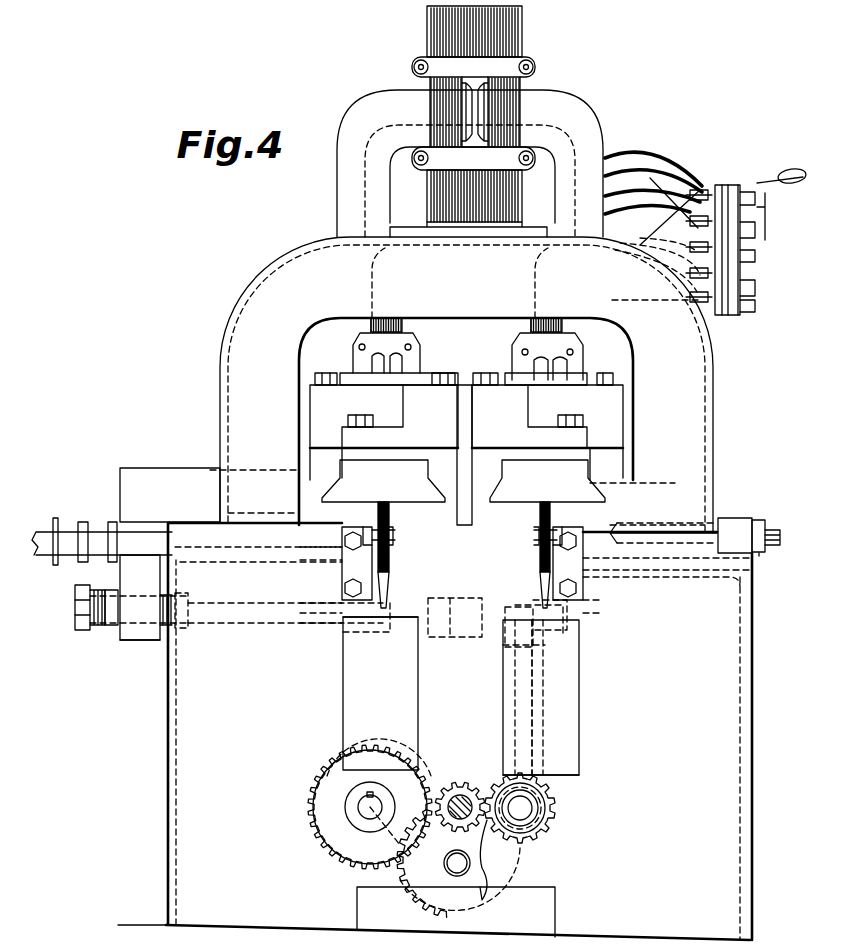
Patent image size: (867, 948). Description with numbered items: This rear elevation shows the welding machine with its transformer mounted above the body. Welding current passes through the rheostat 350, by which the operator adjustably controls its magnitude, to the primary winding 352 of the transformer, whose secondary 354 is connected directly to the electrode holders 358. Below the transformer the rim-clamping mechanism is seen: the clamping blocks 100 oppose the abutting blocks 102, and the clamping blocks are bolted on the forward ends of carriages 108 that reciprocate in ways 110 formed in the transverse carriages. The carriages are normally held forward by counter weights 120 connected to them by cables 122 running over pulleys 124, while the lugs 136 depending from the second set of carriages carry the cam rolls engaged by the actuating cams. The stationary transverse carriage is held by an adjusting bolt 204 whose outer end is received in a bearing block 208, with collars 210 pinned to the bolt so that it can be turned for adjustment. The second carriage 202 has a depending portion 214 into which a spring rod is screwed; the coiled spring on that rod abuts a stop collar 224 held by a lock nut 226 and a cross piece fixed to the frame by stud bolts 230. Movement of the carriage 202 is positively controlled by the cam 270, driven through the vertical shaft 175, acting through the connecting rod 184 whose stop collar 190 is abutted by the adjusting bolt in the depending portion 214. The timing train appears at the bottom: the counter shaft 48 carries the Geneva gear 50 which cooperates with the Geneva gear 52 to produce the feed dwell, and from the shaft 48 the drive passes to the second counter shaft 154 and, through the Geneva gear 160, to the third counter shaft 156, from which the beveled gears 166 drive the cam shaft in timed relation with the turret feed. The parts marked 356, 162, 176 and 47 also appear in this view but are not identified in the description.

The primary winding 352 is at (548, 113).
The rheostat 350 is at (749, 181).
The secondary 354 is at (572, 308).
The electrode holders 358 is at (358, 342).
The bracket 356 is at (590, 340).
The clamping blocks 100 is at (467, 392).
The abutting blocks 102 is at (336, 401).
The ways 110 is at (326, 488).
The carriages 108 is at (357, 498).
The pulleys 124 is at (401, 554).
The cables 122 is at (396, 597).
The second carriage 202 is at (204, 462).
The stop collar 224 is at (56, 518).
The lock nut 226 is at (84, 522).
The stud bolts 230 is at (144, 528).
The bearing block 208 is at (735, 518).
The collars 210 is at (766, 563).
The adjusting bolt 204 is at (665, 549).
The beveled gears 166 is at (64, 609).
The depending portion 214 is at (126, 641).
The stop collar 190 is at (186, 598).
The connecting rod 184 is at (281, 626).
The counter weights 120 is at (336, 686).
The slide edge 162 is at (412, 630).
The Geneva gear 160 is at (456, 640).
The controlling cam 270 is at (572, 613).
The rod 176 is at (518, 716).
The vertical shaft 175 is at (580, 778).
The lugs 136 is at (537, 812).
The third counter shaft 156 is at (512, 866).
The second counter shaft 154 is at (457, 870).
The gear 47 is at (453, 848).
The Geneva gear 52 is at (470, 775).
The counter shaft 48 is at (354, 800).
The Geneva gear 50 is at (318, 810).